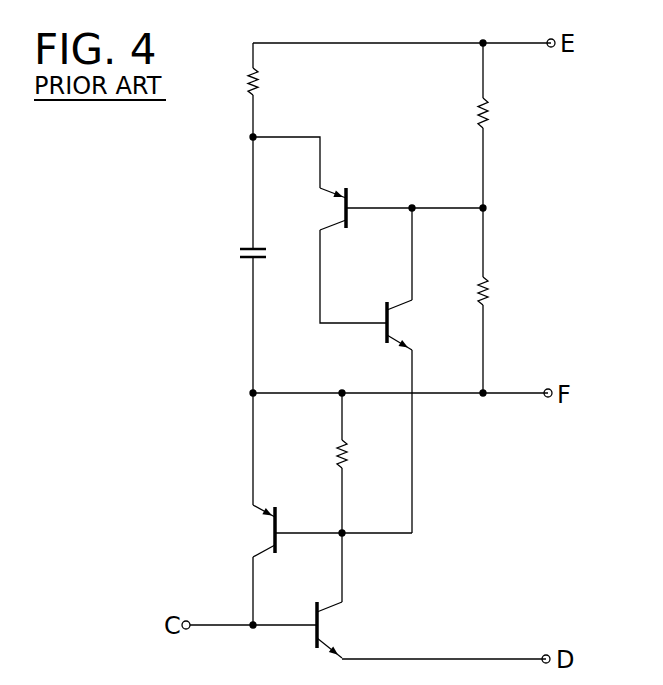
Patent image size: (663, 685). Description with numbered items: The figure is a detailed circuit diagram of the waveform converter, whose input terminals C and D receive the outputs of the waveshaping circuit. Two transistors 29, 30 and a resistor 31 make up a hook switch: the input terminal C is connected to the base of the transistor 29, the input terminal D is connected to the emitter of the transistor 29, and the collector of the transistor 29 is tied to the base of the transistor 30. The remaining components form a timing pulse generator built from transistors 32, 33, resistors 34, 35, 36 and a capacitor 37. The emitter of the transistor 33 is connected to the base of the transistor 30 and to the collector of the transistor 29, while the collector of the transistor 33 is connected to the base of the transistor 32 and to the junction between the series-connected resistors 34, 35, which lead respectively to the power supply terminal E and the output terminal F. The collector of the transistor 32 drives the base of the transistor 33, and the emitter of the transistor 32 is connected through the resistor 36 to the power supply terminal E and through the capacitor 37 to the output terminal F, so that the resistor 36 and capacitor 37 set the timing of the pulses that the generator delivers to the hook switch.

The transistor 29 is at (323, 625).
The transistor 30 is at (271, 536).
The resistor 31 is at (348, 453).
The transistor 32 is at (340, 208).
The transistor 33 is at (392, 323).
The resistor 34 is at (489, 116).
The resistor 35 is at (489, 294).
The resistor 36 is at (259, 80).
The capacitor 37 is at (239, 252).